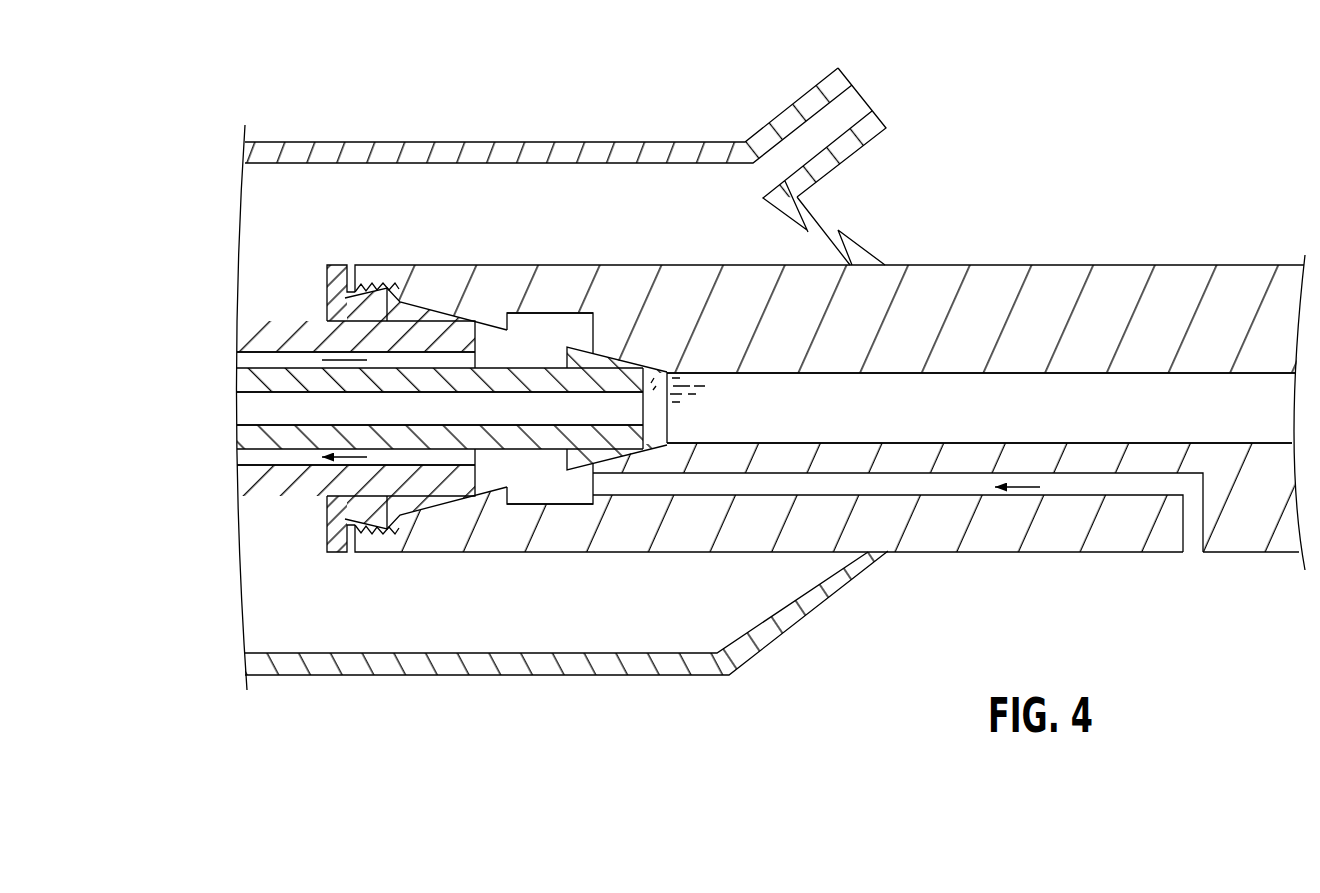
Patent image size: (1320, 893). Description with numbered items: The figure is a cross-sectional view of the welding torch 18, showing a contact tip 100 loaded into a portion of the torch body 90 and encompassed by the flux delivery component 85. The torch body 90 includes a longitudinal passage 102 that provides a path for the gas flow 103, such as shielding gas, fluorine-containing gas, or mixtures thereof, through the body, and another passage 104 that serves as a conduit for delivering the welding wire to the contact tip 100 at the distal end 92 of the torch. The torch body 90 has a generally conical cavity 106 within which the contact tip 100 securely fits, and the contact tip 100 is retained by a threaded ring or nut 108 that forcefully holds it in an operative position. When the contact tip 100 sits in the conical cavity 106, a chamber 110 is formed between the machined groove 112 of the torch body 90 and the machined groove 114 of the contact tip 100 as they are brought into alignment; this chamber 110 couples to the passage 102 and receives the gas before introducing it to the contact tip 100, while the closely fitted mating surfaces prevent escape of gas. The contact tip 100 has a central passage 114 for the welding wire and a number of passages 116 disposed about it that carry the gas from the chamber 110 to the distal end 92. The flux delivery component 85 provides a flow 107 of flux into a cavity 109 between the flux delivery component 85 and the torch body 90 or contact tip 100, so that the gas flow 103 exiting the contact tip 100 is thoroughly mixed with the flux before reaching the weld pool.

The welding torch 18 is at (1014, 146).
The flux delivery component 85 is at (690, 677).
The torch body 90 is at (995, 263).
The distal end 92 is at (217, 403).
The contact tip 100 is at (225, 391).
The passage 102 is at (954, 489).
The gas flow 103 is at (349, 453).
The passage 104 is at (808, 371).
The conical cavity 106 is at (441, 305).
The flow of flux 107 is at (828, 124).
The nut 108 is at (334, 266).
The cavity 109 is at (256, 214).
The chamber 110 is at (545, 333).
The machined groove 112 is at (506, 311).
The machined groove 114 is at (492, 375).
The passages 116 is at (283, 343).